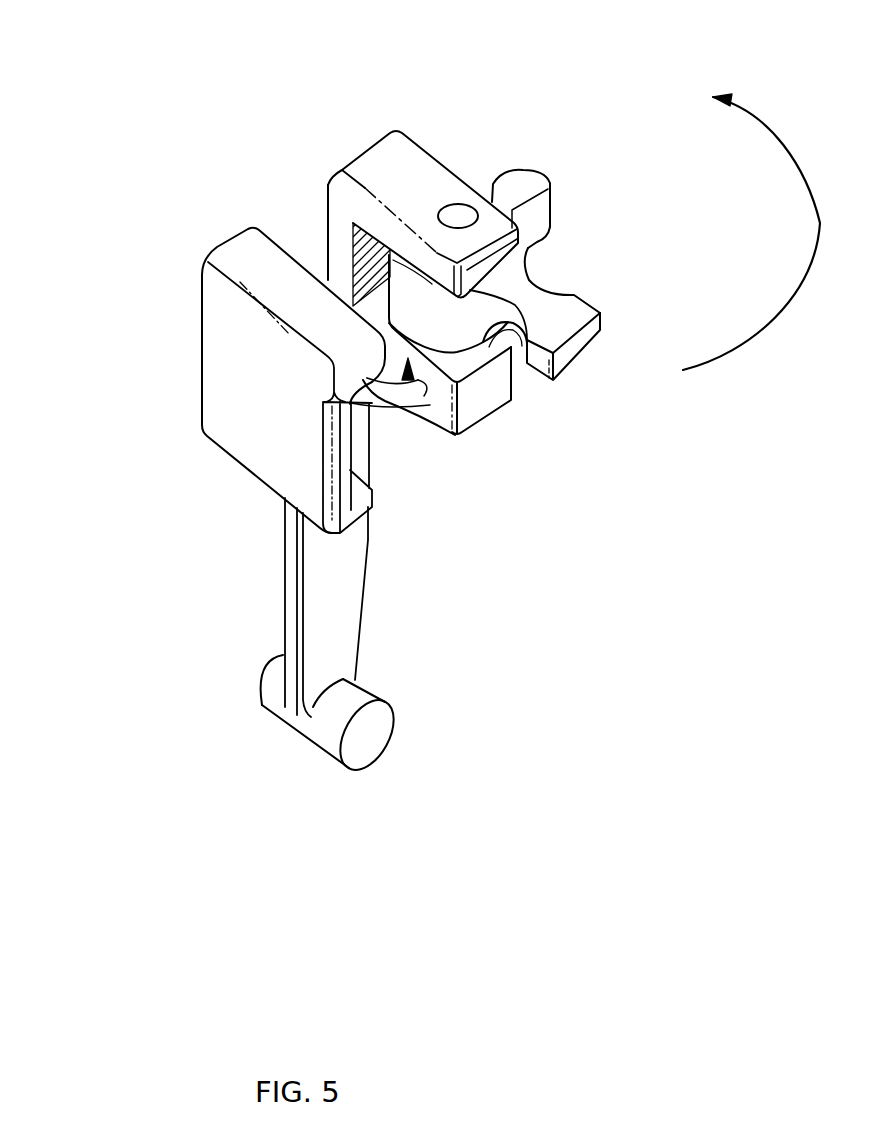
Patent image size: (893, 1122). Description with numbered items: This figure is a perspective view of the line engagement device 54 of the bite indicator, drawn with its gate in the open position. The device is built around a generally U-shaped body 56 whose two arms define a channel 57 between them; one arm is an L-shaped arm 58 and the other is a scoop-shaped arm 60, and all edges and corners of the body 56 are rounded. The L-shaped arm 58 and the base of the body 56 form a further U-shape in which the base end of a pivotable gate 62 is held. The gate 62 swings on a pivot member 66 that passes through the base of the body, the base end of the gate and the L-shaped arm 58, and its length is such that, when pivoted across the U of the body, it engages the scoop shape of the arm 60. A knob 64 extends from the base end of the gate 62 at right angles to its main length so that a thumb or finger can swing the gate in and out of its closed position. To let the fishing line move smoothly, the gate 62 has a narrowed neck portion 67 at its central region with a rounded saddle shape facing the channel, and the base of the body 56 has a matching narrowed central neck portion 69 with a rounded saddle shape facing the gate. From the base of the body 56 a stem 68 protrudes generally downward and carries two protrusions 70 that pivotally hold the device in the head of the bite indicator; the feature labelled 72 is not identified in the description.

The line engagement device 54 is at (196, 363).
The U-shaped body 56 is at (243, 450).
The channel 57 is at (409, 372).
The L-shaped arm 58 is at (373, 148).
The scoop-shaped arm 60 is at (243, 250).
The pivotable gate 62 is at (597, 337).
The knob 64 is at (540, 178).
The pivot member 66 is at (458, 210).
The narrowed neck portion 67 is at (505, 322).
The stem 68 is at (285, 577).
The narrowed central neck portion 69 is at (388, 393).
The protrusions 70 is at (260, 695).
The cradle 72 is at (547, 302).